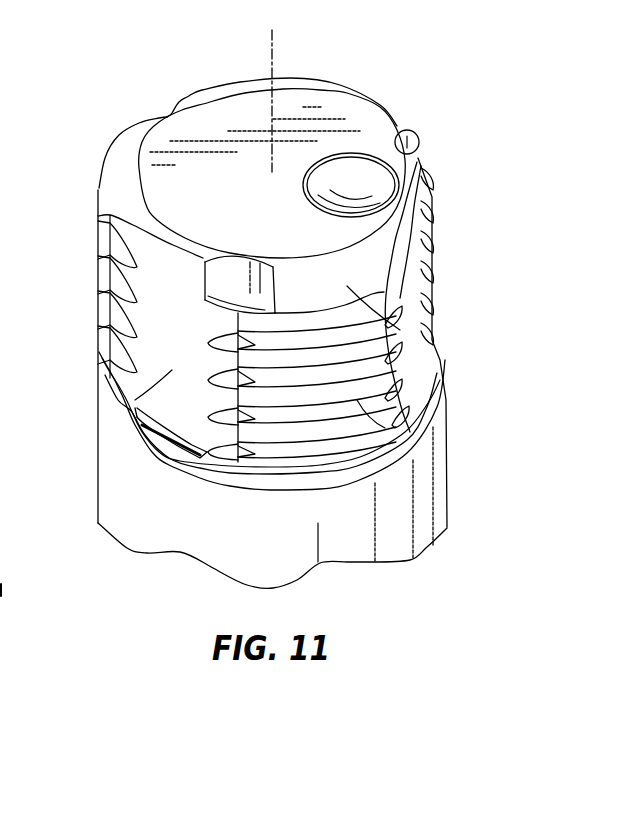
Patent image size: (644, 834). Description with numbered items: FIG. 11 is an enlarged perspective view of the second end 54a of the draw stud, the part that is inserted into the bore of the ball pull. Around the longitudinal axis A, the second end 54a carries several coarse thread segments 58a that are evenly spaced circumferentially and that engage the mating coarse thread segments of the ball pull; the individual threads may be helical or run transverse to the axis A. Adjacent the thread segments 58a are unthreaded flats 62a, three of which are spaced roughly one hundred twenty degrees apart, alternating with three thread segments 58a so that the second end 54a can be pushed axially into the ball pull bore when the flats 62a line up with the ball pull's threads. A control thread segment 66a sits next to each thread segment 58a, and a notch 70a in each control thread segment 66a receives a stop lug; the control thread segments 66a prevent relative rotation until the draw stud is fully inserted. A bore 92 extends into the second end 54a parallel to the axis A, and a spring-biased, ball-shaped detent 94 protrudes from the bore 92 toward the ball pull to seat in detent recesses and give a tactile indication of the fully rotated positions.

The second end of the draw stud 54a is at (386, 74).
The coarse thread segments 58a is at (98, 317).
The flats 62a is at (133, 403).
The control thread segment 66a is at (109, 182).
The notch 70a is at (158, 112).
The bore 92 is at (362, 238).
The detent 94 is at (356, 168).
The axis A is at (268, 66).